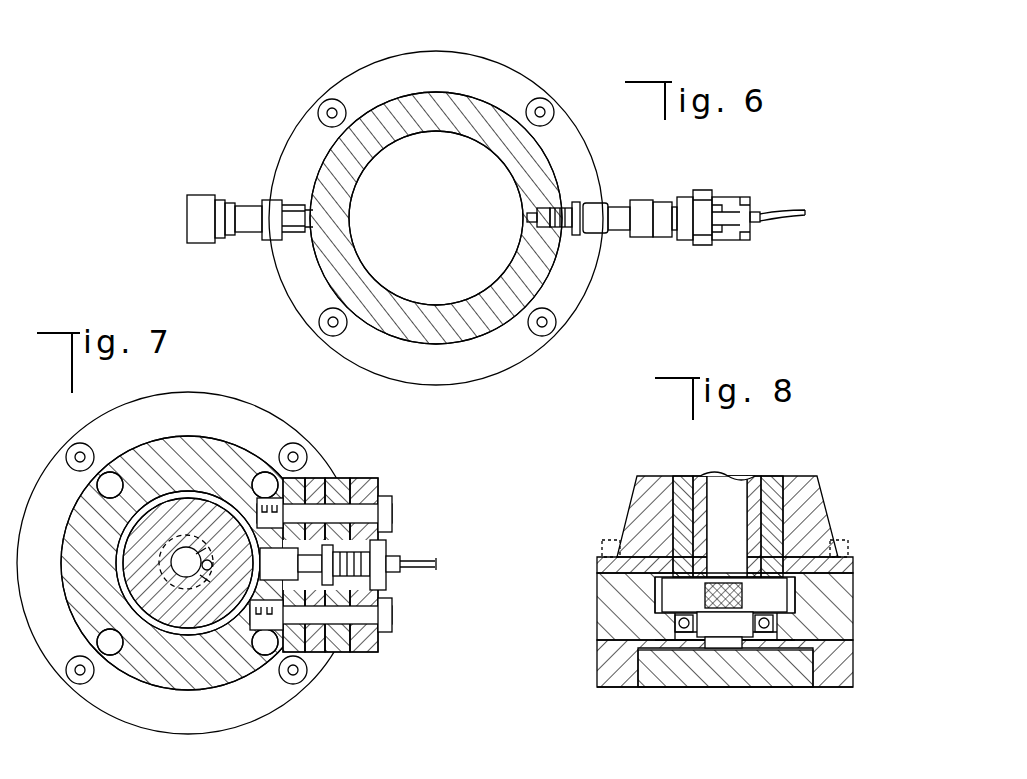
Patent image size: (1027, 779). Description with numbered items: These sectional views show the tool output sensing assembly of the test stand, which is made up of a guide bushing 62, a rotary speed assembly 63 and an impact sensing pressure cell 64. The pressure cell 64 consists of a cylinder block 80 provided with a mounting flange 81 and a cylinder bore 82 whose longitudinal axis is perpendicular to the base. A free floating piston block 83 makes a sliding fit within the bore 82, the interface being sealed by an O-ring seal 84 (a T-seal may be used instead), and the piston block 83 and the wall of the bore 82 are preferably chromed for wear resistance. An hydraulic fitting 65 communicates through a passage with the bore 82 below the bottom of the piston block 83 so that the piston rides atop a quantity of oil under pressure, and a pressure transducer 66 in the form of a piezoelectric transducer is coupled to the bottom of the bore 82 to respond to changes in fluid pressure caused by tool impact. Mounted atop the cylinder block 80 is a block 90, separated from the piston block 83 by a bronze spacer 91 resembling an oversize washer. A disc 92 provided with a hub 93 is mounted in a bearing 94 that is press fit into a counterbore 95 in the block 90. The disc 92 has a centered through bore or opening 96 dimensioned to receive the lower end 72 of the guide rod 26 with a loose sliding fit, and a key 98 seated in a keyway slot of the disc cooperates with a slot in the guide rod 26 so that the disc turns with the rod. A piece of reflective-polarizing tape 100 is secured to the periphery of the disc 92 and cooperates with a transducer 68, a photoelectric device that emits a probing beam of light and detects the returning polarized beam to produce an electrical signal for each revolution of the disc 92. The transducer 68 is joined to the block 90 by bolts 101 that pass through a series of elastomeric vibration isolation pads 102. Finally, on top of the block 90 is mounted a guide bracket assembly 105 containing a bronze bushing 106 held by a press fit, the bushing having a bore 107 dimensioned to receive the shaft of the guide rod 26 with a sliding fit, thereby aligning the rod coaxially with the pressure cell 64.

In FIG. 8, the guide rod 26 is at (728, 488).
In FIG. 8, the guide bushing 62 is at (627, 497).
In FIG. 7, the rotary speed assembly 63 is at (253, 447).
In FIG. 8, the rotary speed assembly 63 is at (597, 596).
In FIG. 8, the impact sensing pressure cell 64 is at (592, 675).
In FIG. 6, the hydraulic fitting 65 is at (243, 205).
In FIG. 6, the pressure transducer 66 is at (617, 200).
In FIG. 7, the transducer 68 is at (398, 547).
In FIG. 7, the lower end of guide rod 72 is at (183, 580).
In FIG. 8, the lower end of guide rod 72 is at (713, 648).
In FIG. 6, the cylinder block 80 is at (550, 156).
In FIG. 6, the mounting flange 81 is at (582, 281).
In FIG. 6, the cylinder bore 82 is at (437, 221).
In FIG. 8, the free floating piston block 83 is at (675, 672).
In FIG. 8, the O-ring seal 84 is at (627, 677).
In FIG. 7, the block 90 is at (202, 438).
In FIG. 8, the block 90 is at (595, 570).
In FIG. 7, the bronze spacer 91 is at (212, 545).
In FIG. 8, the bronze spacer 91 is at (657, 640).
In FIG. 7, the disc 92 is at (188, 494).
In FIG. 8, the disc 92 is at (770, 595).
In FIG. 8, the hub 93 is at (743, 625).
In FIG. 8, the bearing 94 is at (757, 633).
In FIG. 8, the counterbore 95 is at (773, 625).
In FIG. 7, the through bore or opening 96 is at (172, 553).
In FIG. 7, the key 98 is at (207, 577).
In FIG. 8, the reflective-polarizing tape 100 is at (725, 583).
In FIG. 7, the bolts 101 is at (392, 508).
In FIG. 7, the elastomeric vibration isolation pads 102 is at (332, 478).
In FIG. 8, the guide bracket assembly 105 is at (792, 480).
In FIG. 8, the bronze bushing 106 is at (702, 477).
In FIG. 8, the bore 107 is at (715, 477).